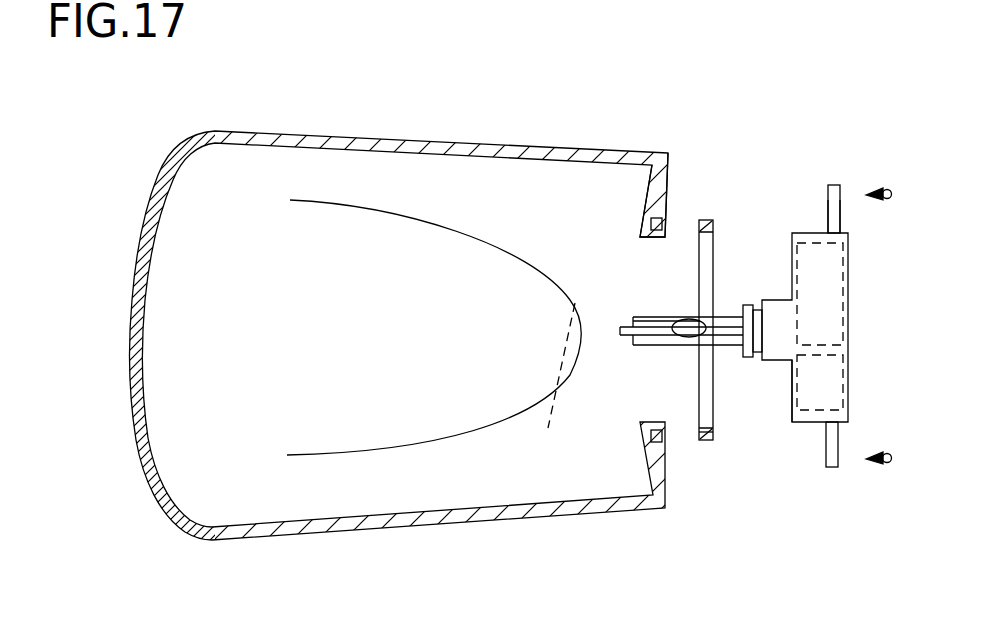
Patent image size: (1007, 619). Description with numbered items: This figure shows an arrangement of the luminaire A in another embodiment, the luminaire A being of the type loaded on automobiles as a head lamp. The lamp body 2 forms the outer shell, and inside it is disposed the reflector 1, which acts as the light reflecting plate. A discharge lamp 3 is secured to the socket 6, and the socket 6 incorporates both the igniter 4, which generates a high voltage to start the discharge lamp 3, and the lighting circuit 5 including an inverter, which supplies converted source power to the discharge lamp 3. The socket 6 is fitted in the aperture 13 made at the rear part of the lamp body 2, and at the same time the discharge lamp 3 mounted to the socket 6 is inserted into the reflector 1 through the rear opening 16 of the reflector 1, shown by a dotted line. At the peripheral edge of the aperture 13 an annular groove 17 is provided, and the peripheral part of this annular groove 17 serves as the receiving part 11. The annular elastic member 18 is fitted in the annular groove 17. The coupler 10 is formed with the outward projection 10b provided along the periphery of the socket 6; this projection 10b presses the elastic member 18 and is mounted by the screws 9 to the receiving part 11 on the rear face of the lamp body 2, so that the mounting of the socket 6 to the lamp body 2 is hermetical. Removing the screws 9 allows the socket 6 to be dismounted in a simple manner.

The reflector 1 is at (383, 207).
The lamp body 2 is at (497, 162).
The discharge lamp 3 is at (682, 316).
The igniter 4 is at (820, 425).
The lighting circuit 5 is at (793, 267).
The socket 6 is at (792, 424).
The screws 9 is at (882, 188).
The coupler 10 is at (837, 225).
The outward projection 10b is at (828, 185).
The receiving part 11 is at (657, 212).
The aperture 13 is at (705, 217).
The rear opening 16 is at (549, 389).
The annular groove 17 is at (665, 250).
The annular elastic member 18 is at (703, 443).
The luminaire A is at (375, 138).